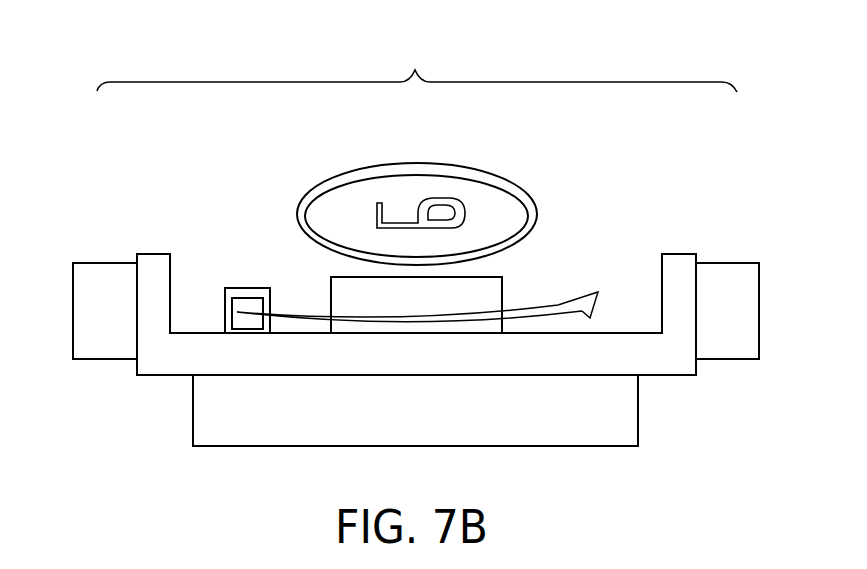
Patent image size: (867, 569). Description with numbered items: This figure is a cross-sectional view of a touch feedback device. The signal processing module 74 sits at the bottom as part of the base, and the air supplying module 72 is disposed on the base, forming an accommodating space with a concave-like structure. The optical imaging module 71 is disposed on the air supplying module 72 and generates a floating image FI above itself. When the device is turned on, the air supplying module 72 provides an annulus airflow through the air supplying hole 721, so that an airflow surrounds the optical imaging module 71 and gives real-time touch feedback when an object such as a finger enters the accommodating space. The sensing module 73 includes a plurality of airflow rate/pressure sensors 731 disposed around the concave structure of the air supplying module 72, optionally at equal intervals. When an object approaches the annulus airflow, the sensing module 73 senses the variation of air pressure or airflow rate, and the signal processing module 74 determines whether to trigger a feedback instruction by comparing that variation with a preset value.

The sensing module 73 is at (417, 64).
The airflow rate/pressure sensor 731 is at (105, 262).
The air supplying module 72 is at (155, 253).
The air supplying hole 721 is at (247, 288).
The optical imaging module 71 is at (503, 292).
The signal processing module 74 is at (640, 410).
The floating image FI is at (415, 163).